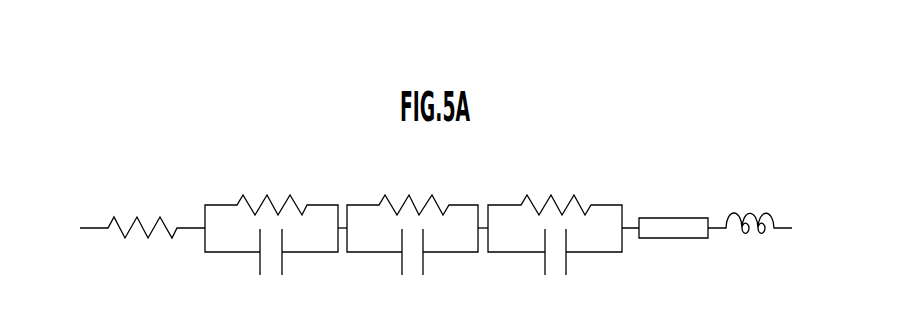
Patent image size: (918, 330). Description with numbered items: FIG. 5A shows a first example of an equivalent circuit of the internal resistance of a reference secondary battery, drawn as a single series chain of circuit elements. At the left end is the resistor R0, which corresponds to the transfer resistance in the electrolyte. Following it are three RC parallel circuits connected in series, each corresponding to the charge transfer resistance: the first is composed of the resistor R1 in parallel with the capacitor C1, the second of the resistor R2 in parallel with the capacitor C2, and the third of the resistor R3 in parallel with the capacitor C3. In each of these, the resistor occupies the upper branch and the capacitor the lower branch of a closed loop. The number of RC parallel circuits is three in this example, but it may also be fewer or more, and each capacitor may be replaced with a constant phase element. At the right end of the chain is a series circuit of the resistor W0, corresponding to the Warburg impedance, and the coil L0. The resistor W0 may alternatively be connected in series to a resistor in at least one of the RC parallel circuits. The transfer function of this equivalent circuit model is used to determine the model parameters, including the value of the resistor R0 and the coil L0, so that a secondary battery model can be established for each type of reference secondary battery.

The resistor R0 is at (142, 194).
The resistor R1 is at (271, 189).
The resistor R2 is at (412, 189).
The resistor R3 is at (555, 189).
The capacitor C1 is at (271, 271).
The capacitor C2 is at (412, 271).
The capacitor C3 is at (555, 271).
The resistor W0 is at (672, 194).
The coil L0 is at (757, 191).